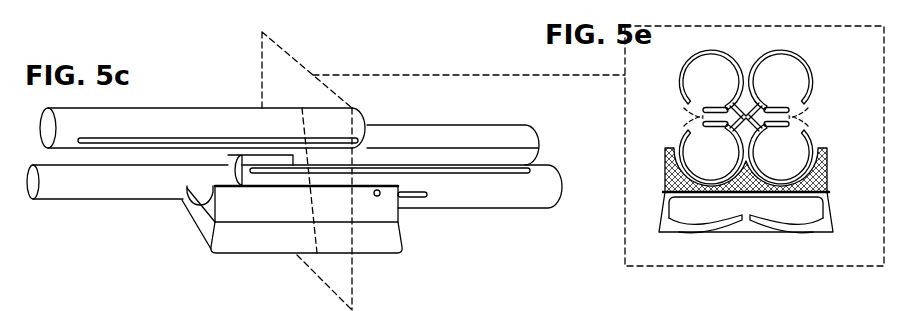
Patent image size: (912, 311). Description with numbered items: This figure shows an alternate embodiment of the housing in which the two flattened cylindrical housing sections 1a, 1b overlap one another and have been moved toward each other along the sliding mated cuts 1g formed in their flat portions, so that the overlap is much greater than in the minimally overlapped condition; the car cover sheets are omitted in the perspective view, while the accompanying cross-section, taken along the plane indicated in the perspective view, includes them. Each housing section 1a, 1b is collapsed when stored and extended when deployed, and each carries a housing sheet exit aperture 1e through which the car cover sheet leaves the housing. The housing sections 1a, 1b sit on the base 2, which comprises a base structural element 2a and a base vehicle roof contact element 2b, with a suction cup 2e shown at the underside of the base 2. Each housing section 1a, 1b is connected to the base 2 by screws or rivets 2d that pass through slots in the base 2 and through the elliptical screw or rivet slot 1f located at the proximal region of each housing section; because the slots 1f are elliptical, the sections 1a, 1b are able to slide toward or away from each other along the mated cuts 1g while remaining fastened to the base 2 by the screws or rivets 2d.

In FIG. 5e, the housing section 1a is at (811, 73).
In FIG. 5e, the housing section 1b is at (679, 84).
In FIG. 5c, the housing sheet exit aperture 1e is at (167, 142).
In FIG. 5e, the housing sheet exit aperture 1e is at (745, 115).
In FIG. 5c, the elliptical screw or rivet slot 1f is at (413, 194).
In FIG. 5e, the sliding mated cuts 1g is at (745, 113).
In FIG. 5c, the base 2 is at (302, 219).
In FIG. 5e, the base 2 is at (752, 207).
In FIG. 5c, the base structural element 2a is at (432, 187).
In FIG. 5e, the base structural element 2a is at (838, 147).
In FIG. 5c, the base vehicle roof contact element 2b is at (432, 222).
In FIG. 5e, the base vehicle roof contact element 2b is at (768, 230).
In FIG. 5c, the screw or rivet 2d is at (380, 195).
In FIG. 5e, the suction cup 2e is at (746, 241).